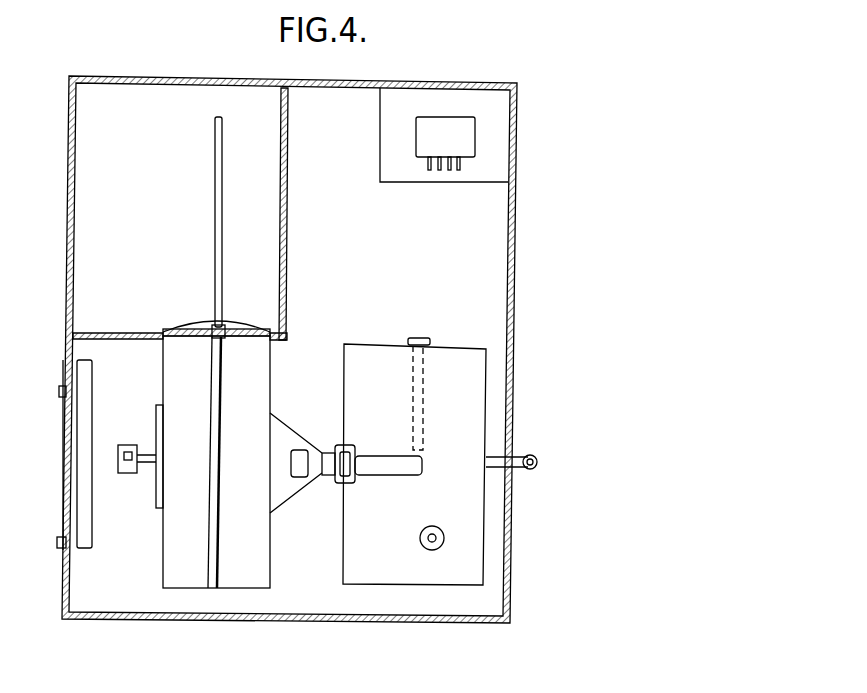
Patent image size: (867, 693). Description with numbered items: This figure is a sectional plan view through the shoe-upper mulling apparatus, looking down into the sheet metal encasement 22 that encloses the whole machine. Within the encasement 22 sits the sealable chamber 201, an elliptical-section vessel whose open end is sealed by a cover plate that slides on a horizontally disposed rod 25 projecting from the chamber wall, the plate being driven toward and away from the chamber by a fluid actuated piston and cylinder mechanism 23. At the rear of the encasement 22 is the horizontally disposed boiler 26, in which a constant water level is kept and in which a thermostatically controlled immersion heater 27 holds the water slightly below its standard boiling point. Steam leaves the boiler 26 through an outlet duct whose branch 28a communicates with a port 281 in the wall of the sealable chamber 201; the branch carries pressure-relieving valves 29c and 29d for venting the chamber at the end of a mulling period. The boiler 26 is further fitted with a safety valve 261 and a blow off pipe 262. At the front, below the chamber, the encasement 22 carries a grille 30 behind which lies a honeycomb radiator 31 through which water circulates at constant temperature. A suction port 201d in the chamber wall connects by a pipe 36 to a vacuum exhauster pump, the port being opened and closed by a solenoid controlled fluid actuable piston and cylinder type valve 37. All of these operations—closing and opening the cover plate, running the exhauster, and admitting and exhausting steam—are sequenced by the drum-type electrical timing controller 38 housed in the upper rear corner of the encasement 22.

The sheet metal encasement 22 is at (518, 248).
The electrical timing controller 38 is at (458, 151).
The horizontally disposed rod 25 is at (215, 248).
The fluid actuated piston and cylinder mechanism 23 is at (222, 337).
The sealable chamber 201 is at (208, 396).
The suction port 201d is at (152, 508).
The pipe 36 is at (127, 445).
The solenoid controlled fluid actuable piston and cylinder type valve 37 is at (127, 473).
The honeycomb radiator 31 is at (82, 413).
The grille 30 is at (63, 454).
The boiler 26 is at (463, 404).
The thermostatically controlled immersion heater 27 is at (425, 340).
The branch of outlet duct 28a is at (370, 476).
The pressure relieving valve 29d is at (345, 458).
The pressure relieving valve 29c is at (297, 450).
The port 281 is at (287, 483).
The safety valve 261 is at (451, 527).
The blow off pipe 262 is at (436, 543).